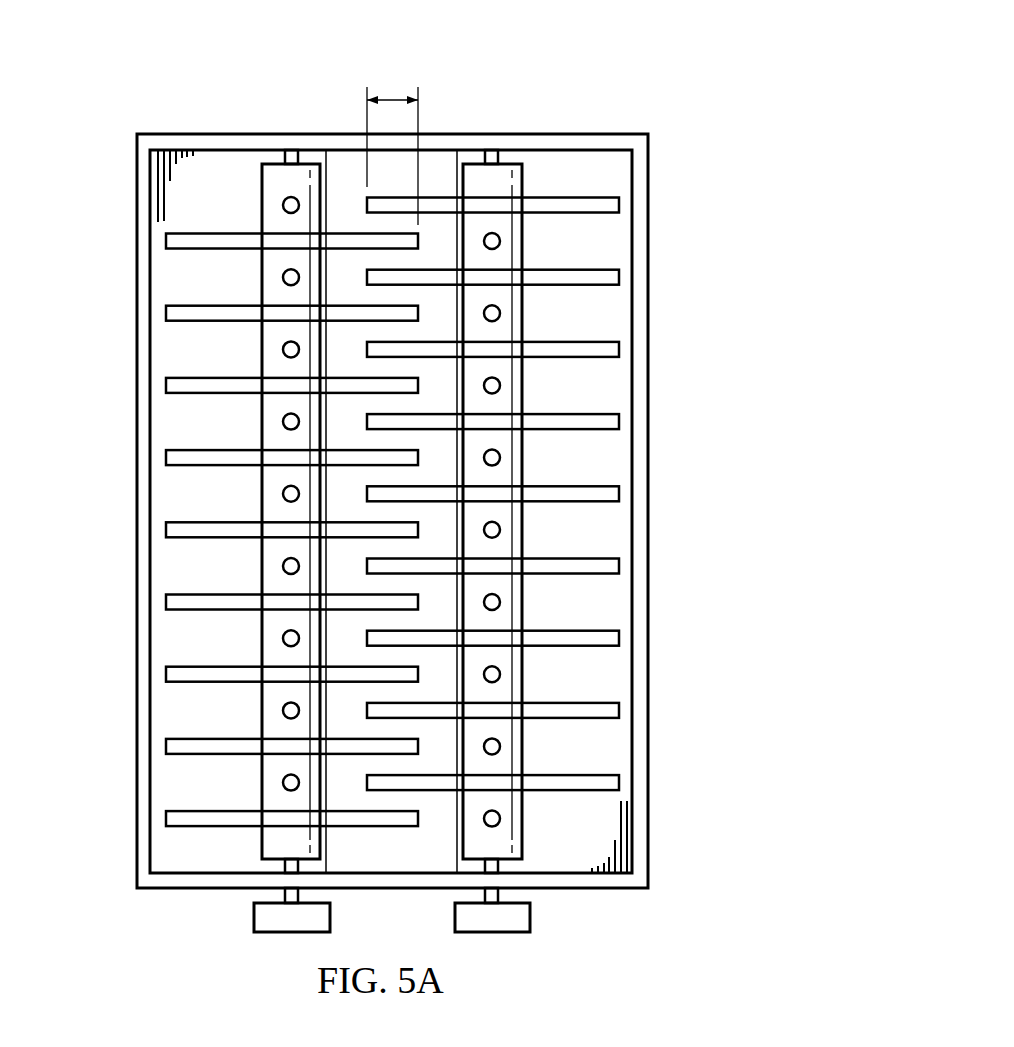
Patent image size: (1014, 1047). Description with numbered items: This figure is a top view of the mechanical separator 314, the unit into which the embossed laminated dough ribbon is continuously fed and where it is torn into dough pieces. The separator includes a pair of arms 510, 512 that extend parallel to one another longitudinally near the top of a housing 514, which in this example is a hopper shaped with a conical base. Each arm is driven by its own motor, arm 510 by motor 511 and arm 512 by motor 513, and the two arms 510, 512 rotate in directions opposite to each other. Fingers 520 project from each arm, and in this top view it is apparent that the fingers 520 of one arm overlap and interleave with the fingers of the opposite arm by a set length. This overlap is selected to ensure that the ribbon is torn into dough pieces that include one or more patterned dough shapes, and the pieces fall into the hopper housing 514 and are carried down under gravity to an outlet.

The mechanical separator 314 is at (677, 65).
The arm 510 is at (529, 173).
The motor 511 is at (530, 918).
The arm 512 is at (255, 173).
The motor 513 is at (254, 918).
The housing 514 is at (129, 287).
The fingers 520 is at (166, 385).